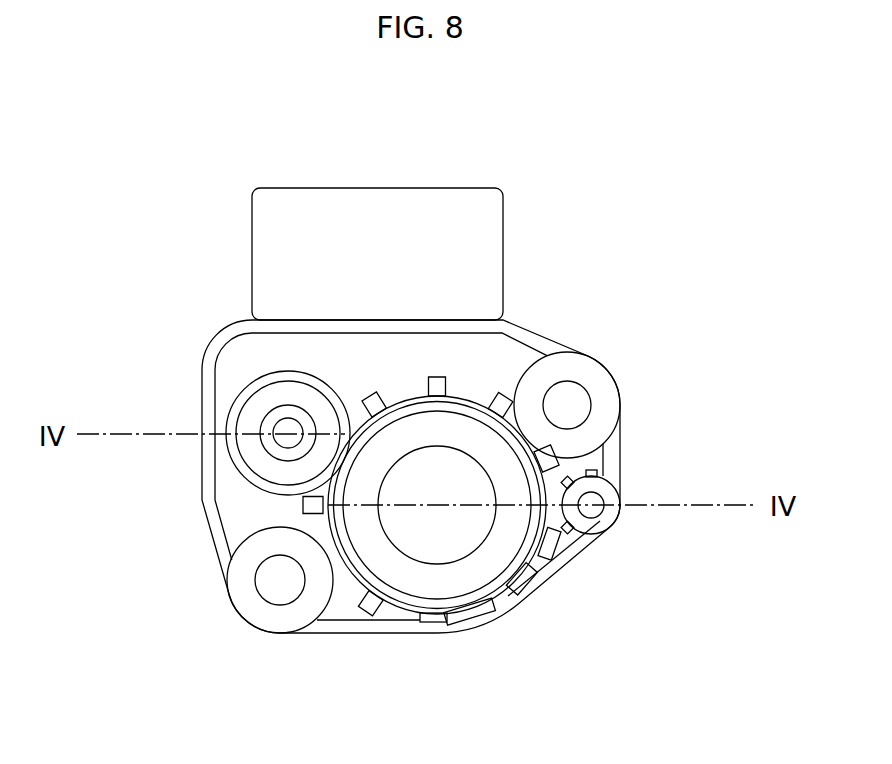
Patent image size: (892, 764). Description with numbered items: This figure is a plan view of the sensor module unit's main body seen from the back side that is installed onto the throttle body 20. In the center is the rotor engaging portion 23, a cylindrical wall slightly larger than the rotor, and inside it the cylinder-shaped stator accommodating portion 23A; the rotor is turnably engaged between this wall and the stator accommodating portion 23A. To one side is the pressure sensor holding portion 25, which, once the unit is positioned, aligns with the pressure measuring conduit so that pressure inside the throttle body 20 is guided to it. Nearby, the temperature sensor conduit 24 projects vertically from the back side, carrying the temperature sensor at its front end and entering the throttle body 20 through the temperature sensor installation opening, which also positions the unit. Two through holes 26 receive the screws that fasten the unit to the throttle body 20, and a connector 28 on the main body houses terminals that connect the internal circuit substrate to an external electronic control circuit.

The throttle body 20 is at (507, 618).
The rotor engaging portion 23 is at (572, 545).
The stator accommodating portion 23A is at (430, 547).
The temperature sensor conduit 24 is at (603, 493).
The pressure sensor holding portion 25 is at (270, 410).
The through holes 26 is at (580, 386).
The connector 28 is at (505, 241).